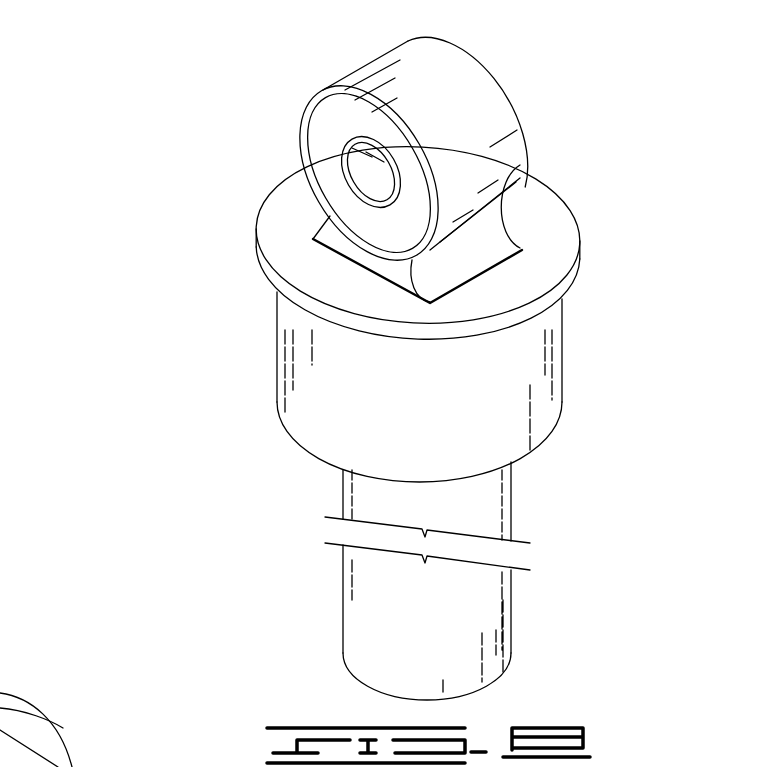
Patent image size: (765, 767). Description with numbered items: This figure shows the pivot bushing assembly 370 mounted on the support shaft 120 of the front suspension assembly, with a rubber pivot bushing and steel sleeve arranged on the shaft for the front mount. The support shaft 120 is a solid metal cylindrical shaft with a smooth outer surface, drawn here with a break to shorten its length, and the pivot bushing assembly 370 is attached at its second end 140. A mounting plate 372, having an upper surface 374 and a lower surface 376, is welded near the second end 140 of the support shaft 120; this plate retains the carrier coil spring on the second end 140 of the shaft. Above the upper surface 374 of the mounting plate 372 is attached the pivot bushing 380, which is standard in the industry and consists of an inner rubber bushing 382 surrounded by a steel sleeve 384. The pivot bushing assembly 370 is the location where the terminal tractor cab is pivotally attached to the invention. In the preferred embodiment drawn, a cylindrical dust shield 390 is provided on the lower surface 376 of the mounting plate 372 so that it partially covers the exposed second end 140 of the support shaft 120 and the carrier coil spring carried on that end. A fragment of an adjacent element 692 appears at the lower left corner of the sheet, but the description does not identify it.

The pivot bushing assembly 370 is at (187, 207).
The mounting plate 372 is at (267, 280).
The upper surface 374 is at (601, 211).
The lower surface 376 is at (568, 280).
The pivot bushing 380 is at (300, 146).
The inner rubber bushing 382 is at (337, 120).
The steel sleeve 384 is at (443, 63).
The cylindrical dust shield 390 is at (322, 438).
The second end 140 is at (504, 510).
The support shaft 120 is at (357, 618).
The adjacent guide element 692 is at (25, 760).